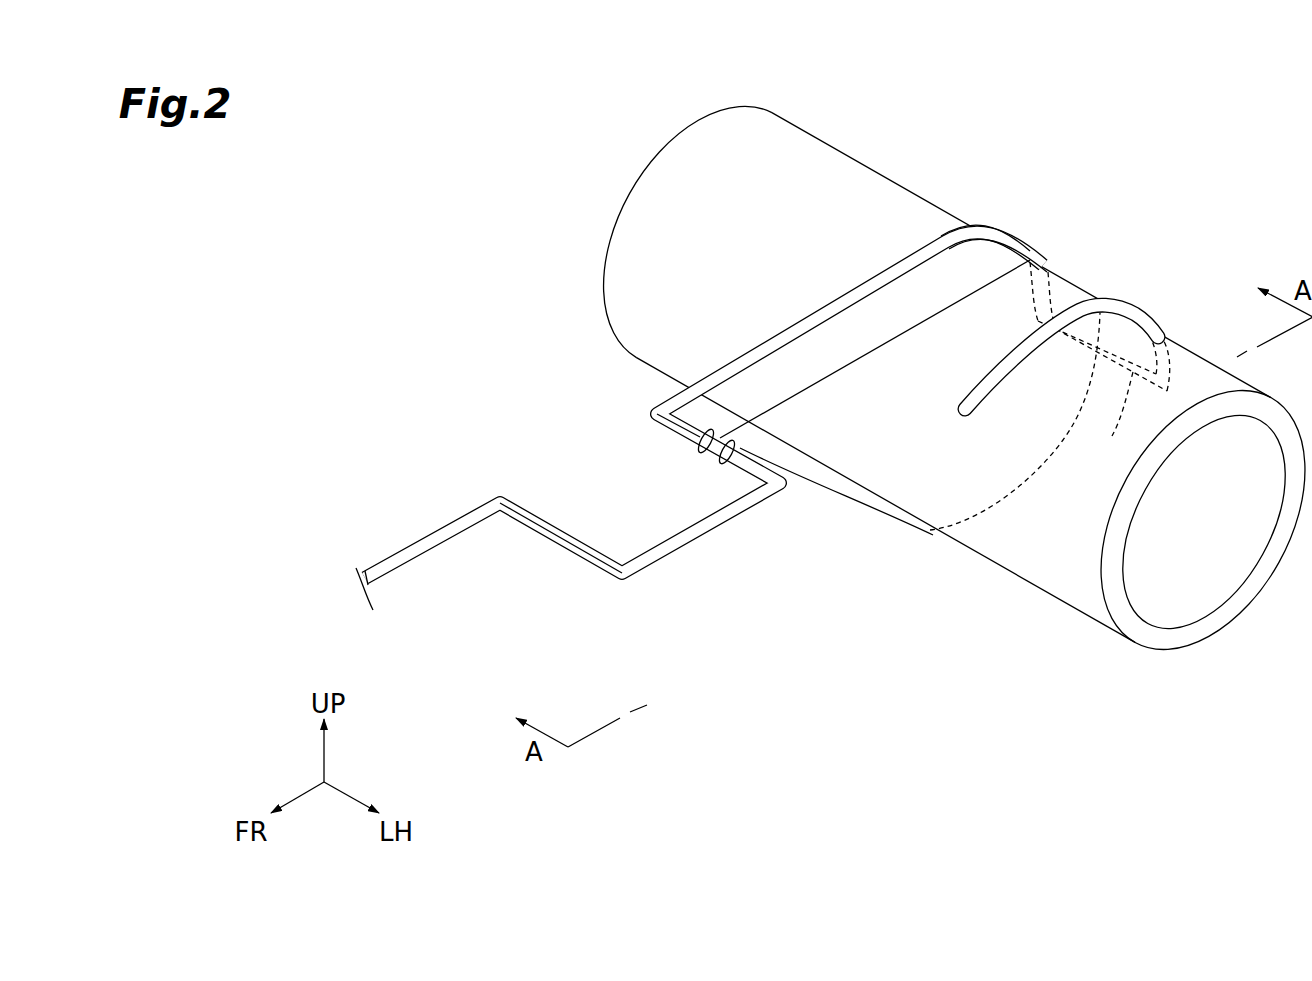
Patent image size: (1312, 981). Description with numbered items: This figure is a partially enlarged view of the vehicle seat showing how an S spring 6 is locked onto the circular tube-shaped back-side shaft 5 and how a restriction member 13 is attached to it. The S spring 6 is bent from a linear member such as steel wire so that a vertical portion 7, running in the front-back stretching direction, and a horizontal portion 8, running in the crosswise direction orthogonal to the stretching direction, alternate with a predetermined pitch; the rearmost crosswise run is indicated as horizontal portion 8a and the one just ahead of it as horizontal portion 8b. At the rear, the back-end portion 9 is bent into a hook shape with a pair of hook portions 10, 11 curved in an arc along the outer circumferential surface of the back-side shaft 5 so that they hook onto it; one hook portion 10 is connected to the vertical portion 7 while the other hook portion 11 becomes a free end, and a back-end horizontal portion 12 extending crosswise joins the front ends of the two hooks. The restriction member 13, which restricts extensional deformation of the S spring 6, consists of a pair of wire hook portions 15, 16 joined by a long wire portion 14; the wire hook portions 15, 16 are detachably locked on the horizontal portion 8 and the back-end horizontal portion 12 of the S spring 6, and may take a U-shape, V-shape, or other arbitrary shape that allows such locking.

The back-side shaft 5 is at (663, 150).
The S spring 6 is at (417, 541).
The vertical portion 7 is at (723, 370).
The horizontal portion 8 is at (699, 433).
The horizontal portion 8a is at (672, 421).
The horizontal portion 8b is at (558, 538).
The back-end portion 9 is at (944, 232).
The hook portion 10 is at (1003, 227).
The hook portion 11 is at (1120, 300).
The back-end horizontal portion 12 is at (1031, 421).
The restriction member 13 is at (898, 333).
The long wire portion 14 is at (868, 350).
The wire hook portion 15 is at (699, 447).
The wire hook portion 16 is at (717, 462).